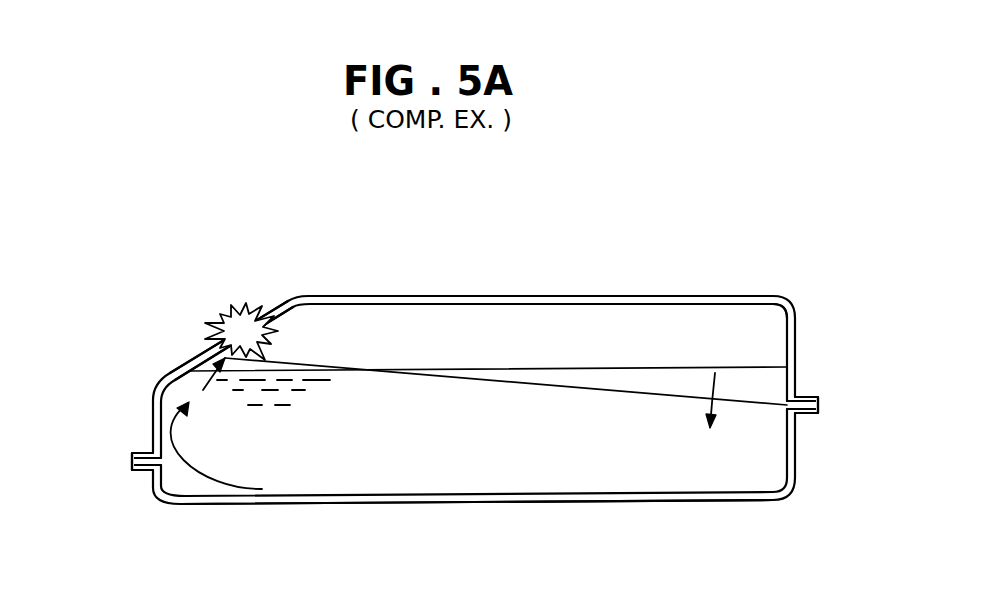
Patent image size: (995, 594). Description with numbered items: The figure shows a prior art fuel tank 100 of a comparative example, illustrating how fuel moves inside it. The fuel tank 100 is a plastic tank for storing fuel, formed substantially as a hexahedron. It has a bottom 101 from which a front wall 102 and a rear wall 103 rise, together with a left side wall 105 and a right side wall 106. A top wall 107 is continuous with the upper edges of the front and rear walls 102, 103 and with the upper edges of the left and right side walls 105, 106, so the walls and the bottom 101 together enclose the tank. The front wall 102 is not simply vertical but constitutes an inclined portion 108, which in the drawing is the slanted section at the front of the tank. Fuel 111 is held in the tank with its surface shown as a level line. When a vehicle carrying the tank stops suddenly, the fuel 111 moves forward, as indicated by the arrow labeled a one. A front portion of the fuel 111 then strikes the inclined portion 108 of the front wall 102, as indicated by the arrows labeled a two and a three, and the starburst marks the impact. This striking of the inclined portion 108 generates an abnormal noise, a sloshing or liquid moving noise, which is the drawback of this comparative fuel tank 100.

The fuel tank 100 is at (245, 178).
The bottom 101 is at (473, 502).
The front wall 102 is at (142, 435).
The rear wall 103 is at (795, 335).
The left side wall 105 is at (528, 328).
The right side wall 106 is at (548, 311).
The top wall 107 is at (463, 296).
The inclined portion 108 is at (176, 369).
The fuel 111 is at (647, 365).